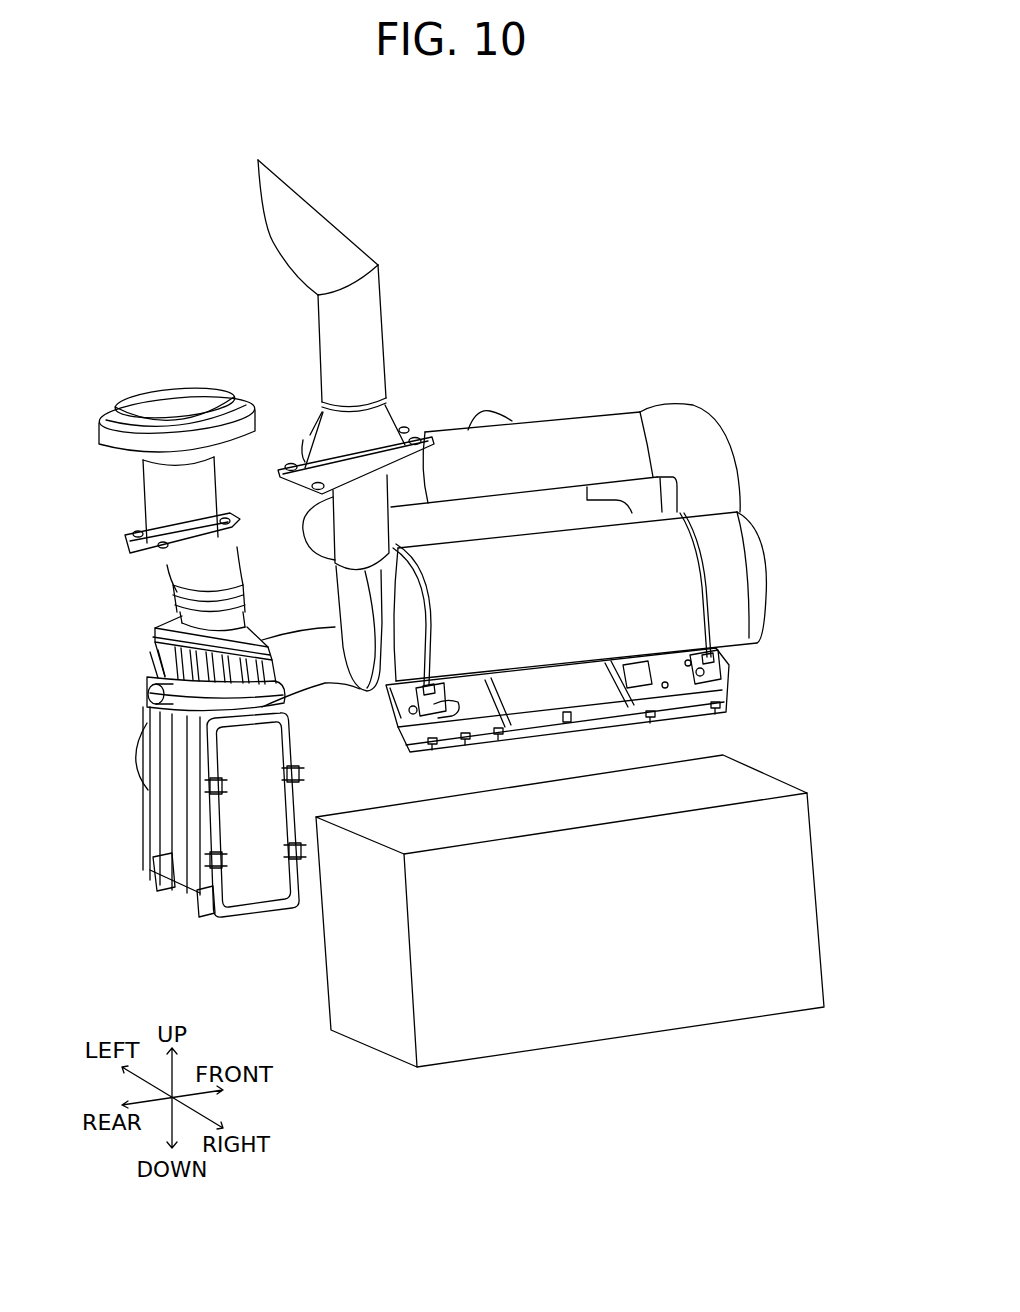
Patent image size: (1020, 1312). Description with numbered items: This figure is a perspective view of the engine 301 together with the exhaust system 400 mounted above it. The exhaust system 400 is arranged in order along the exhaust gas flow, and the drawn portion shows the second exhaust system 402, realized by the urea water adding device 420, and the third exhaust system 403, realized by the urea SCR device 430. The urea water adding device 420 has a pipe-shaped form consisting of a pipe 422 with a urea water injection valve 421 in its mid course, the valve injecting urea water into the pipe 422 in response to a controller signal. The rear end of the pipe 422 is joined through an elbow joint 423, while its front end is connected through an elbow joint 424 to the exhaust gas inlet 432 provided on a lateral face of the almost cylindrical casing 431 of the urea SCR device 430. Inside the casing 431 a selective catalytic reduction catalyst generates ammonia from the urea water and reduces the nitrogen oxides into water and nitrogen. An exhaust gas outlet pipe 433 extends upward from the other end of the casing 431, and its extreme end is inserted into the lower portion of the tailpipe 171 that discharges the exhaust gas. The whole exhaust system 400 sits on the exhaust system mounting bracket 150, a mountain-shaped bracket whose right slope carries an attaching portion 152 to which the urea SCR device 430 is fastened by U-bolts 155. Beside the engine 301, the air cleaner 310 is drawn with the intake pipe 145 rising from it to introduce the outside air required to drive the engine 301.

The tailpipe 171 is at (360, 310).
The elbow joint 423 is at (403, 475).
The exhaust gas outlet pipe 433 is at (357, 527).
The exhaust system 400 is at (678, 380).
The second exhaust system 402 is at (575, 416).
The urea water adding device 420 is at (575, 416).
The urea water injection valve 421 is at (482, 420).
The pipe 422 is at (558, 428).
The elbow joint 424 is at (702, 432).
The exhaust gas inlet 432 is at (720, 510).
The third exhaust system 403 is at (633, 593).
The urea SCR device 430 is at (633, 593).
The casing 431 is at (655, 568).
The U-bolts 155 is at (707, 625).
The attaching portion 152 is at (707, 670).
The exhaust system mounting bracket 150 is at (677, 703).
The engine 301 is at (632, 1005).
The intake pipe 145 is at (160, 485).
The air cleaner 310 is at (162, 820).